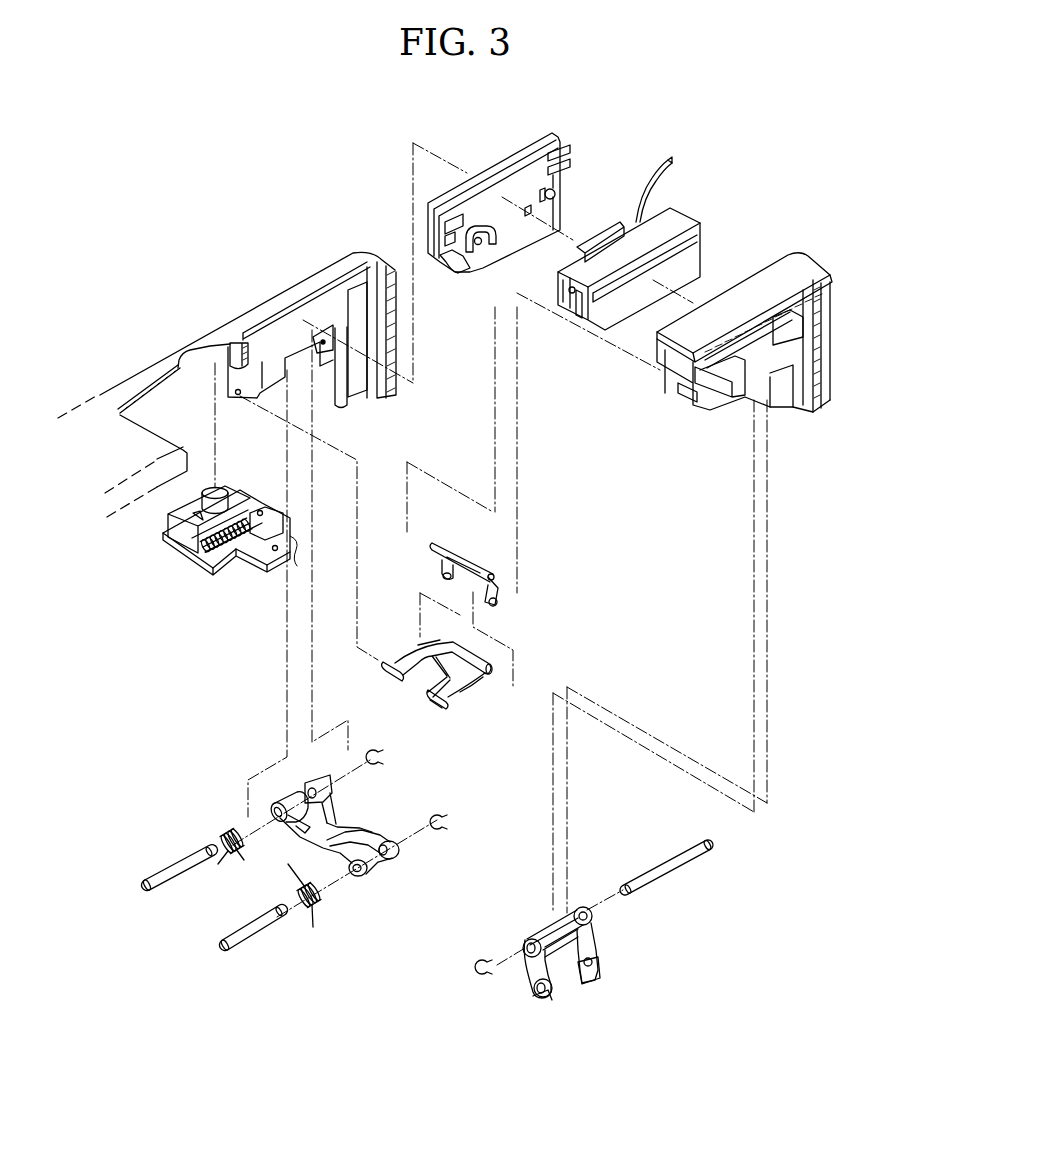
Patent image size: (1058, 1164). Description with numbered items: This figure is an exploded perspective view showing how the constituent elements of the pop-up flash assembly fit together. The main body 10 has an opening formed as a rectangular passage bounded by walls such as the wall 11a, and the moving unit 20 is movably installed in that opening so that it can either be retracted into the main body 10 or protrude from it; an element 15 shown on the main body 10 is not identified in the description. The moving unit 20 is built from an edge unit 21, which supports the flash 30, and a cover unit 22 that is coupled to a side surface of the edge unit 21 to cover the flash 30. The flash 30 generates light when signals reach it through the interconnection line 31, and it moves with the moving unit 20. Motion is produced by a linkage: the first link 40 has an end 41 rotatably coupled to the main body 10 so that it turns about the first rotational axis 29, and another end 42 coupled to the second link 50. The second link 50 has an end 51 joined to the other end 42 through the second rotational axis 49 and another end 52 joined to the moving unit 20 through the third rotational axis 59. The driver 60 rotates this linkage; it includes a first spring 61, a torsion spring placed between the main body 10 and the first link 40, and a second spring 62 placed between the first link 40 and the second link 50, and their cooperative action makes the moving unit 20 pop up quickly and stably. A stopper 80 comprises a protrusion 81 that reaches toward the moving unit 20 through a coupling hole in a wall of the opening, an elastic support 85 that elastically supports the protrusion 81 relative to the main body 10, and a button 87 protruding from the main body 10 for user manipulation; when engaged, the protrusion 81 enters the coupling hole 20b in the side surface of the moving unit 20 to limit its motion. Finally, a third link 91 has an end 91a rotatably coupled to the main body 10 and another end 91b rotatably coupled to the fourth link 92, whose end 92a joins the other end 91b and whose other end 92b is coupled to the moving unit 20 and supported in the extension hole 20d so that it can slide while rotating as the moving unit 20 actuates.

The main body 10 is at (258, 310).
The wall 11a is at (317, 307).
The recess 15 is at (230, 373).
The moving unit 20 is at (630, 291).
The coupling hole 20b is at (680, 400).
The extension hole 20d is at (461, 270).
The edge unit 21 is at (672, 370).
The cover unit 22 is at (500, 250).
The first rotational axis 29 is at (173, 870).
The flash 30 is at (674, 217).
The interconnection line 31 is at (638, 212).
The first link 40 is at (329, 833).
The end of the first link 41 is at (288, 800).
The other end of the first link 42 is at (368, 874).
The second rotational axis 49 is at (247, 940).
The second link 50 is at (584, 926).
The end of the second link 51 is at (600, 967).
The other end of the second link 52 is at (583, 908).
The third rotational axis 59 is at (667, 870).
The driver 60 is at (289, 918).
The first spring 61 is at (236, 856).
The second spring 62 is at (322, 908).
The stopper 80 is at (230, 528).
The protrusion 81 is at (298, 553).
The elastic support 85 is at (220, 547).
The button 87 is at (213, 490).
The third link 91 is at (432, 674).
The end of the third link 91a is at (446, 706).
The other end of the third link 91b is at (447, 647).
The fourth link 92 is at (496, 581).
The end of the fourth link 92a is at (497, 605).
The other end of the fourth link 92b is at (493, 577).